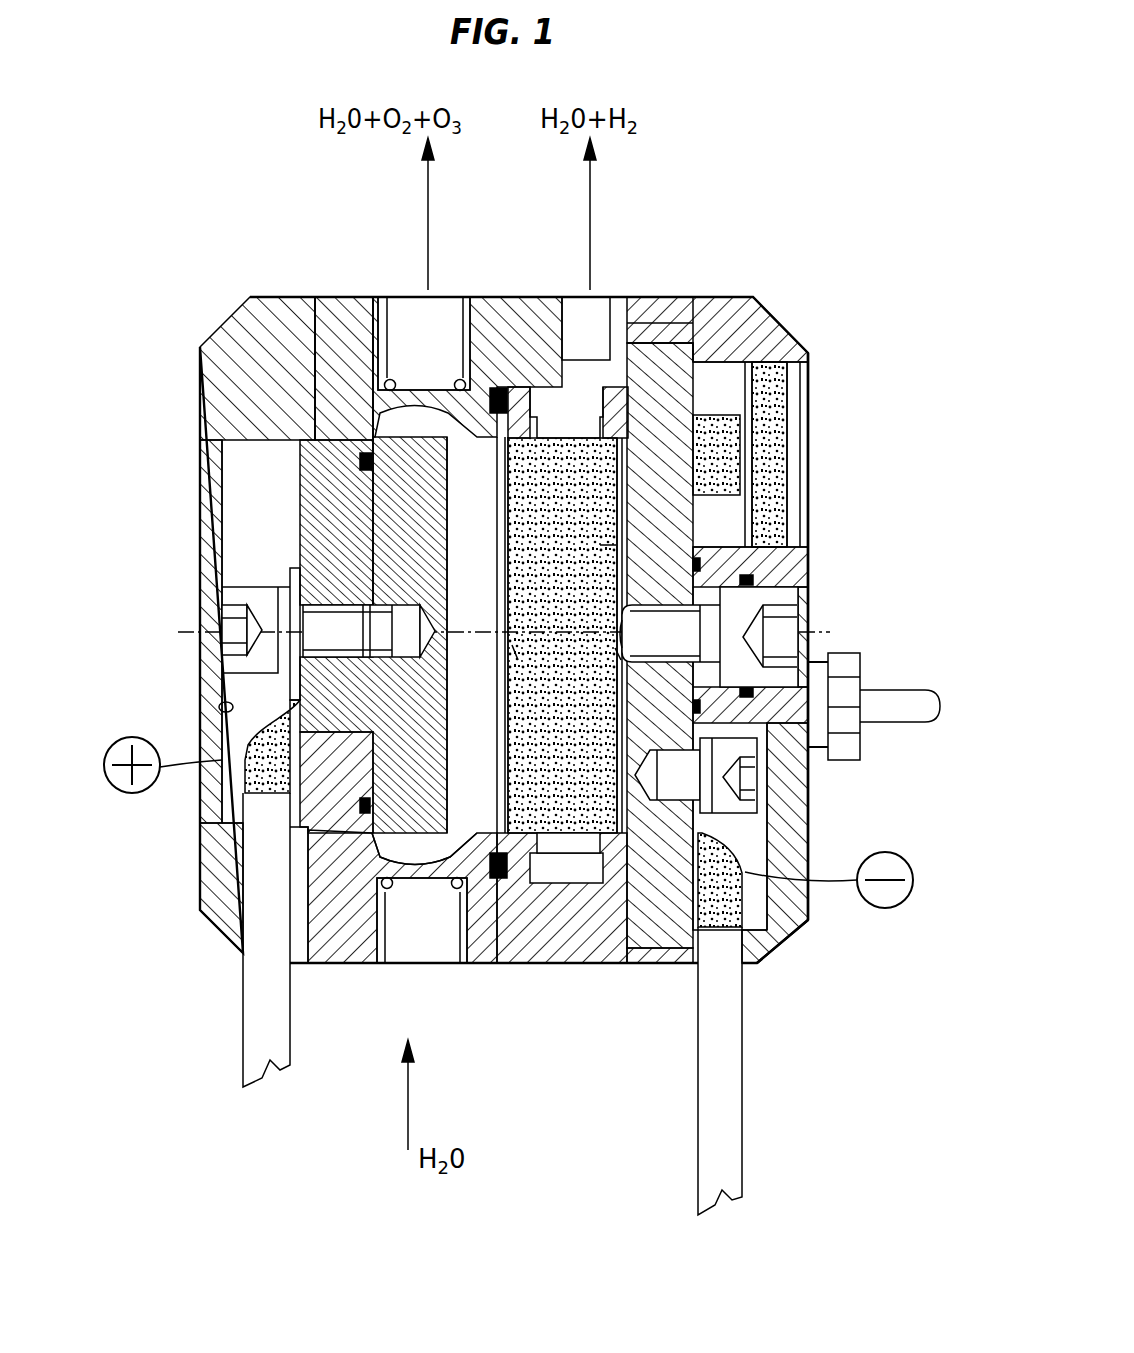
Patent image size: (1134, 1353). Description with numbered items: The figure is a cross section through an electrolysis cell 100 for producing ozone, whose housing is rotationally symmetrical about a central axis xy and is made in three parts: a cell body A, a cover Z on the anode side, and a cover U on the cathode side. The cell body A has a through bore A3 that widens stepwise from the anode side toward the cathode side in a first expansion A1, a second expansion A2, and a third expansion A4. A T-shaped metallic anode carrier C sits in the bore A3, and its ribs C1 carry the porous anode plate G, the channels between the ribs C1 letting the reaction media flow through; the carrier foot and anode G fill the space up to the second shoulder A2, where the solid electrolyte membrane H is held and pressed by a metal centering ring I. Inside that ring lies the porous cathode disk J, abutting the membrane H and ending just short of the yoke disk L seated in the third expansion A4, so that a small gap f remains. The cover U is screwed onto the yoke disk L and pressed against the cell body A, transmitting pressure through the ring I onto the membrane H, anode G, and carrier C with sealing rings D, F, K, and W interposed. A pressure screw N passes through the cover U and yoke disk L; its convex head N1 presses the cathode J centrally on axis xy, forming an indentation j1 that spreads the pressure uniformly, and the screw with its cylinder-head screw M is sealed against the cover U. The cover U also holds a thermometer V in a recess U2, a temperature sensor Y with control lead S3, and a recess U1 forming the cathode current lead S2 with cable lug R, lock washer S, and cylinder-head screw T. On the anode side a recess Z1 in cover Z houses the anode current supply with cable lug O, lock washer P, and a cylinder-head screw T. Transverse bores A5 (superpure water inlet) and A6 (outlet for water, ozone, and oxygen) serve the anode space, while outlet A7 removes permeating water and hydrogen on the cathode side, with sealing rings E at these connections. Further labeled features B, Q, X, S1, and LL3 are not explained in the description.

The electrolysis cell 100 is at (172, 950).
The cell body A is at (250, 297).
The housing block B is at (328, 472).
The anode carrier C is at (360, 500).
The sealing ring D is at (385, 520).
The sealing rings E is at (410, 305).
The sealing ring F is at (493, 300).
The anode G is at (452, 312).
The solid electrolyte membrane H is at (535, 300).
The centering ring I is at (577, 437).
The cathode J is at (612, 330).
The sealing ring K is at (662, 360).
The yoke disk L is at (690, 330).
The cylinder-head screw M is at (735, 330).
The pressure screw N is at (768, 325).
The cable lug O is at (322, 790).
The lock washer P is at (330, 645).
The bottom block Q is at (395, 840).
The cable lug R is at (600, 870).
The lock washer S is at (625, 940).
The cylinder-head screw T is at (690, 860).
The cover on the cathode side U is at (797, 445).
The thermometer V is at (790, 490).
The sealing ring W is at (800, 555).
The terminal bolt X is at (760, 620).
The temperature sensor Y is at (843, 713).
The cover on the anode side Z is at (214, 537).
The recess Z1 is at (220, 707).
The first expansion A1 is at (405, 836).
The second expansion A2 is at (500, 840).
The through bore A3 is at (322, 515).
The third expansion A4 is at (620, 400).
The bore A5 is at (395, 938).
The bore A6 is at (390, 378).
The outlet A7 is at (560, 410).
The ribs C1 is at (487, 707).
The convex head N1 is at (618, 612).
The recess U1 is at (778, 928).
The recess U2 is at (710, 345).
The terminal bolt LL3 is at (728, 745).
The terminal strip S1 is at (258, 1025).
The current lead S2 is at (728, 1034).
The control lead S3 is at (888, 713).
The gap f is at (600, 545).
The central axis xy is at (516, 650).
The indentation j1 is at (618, 653).